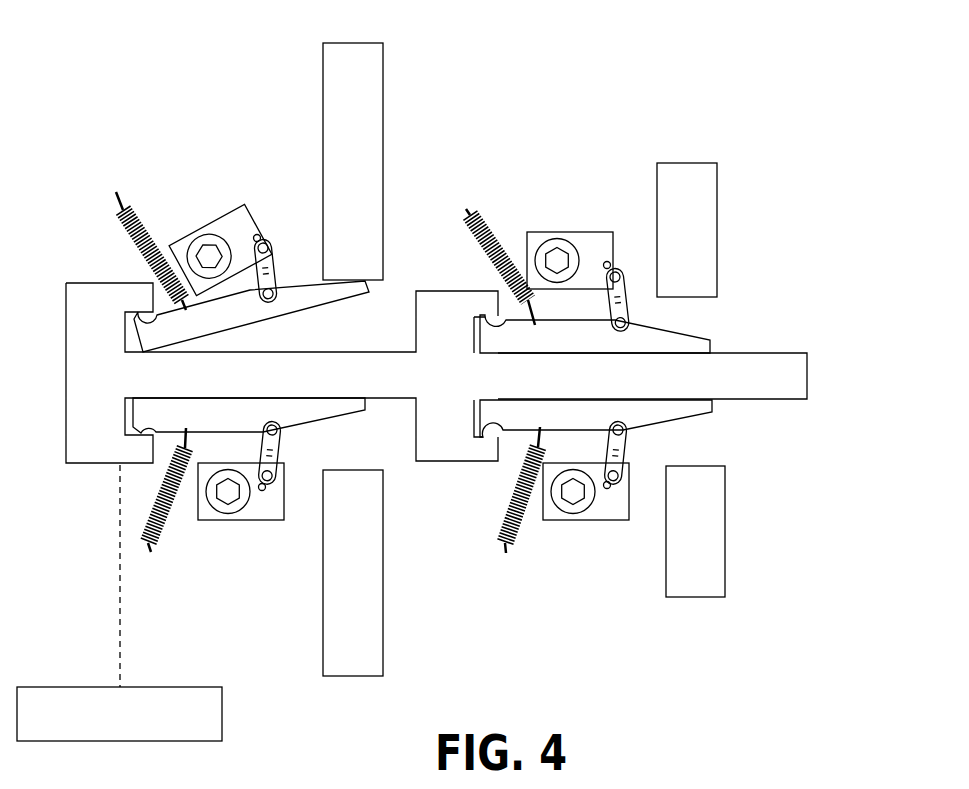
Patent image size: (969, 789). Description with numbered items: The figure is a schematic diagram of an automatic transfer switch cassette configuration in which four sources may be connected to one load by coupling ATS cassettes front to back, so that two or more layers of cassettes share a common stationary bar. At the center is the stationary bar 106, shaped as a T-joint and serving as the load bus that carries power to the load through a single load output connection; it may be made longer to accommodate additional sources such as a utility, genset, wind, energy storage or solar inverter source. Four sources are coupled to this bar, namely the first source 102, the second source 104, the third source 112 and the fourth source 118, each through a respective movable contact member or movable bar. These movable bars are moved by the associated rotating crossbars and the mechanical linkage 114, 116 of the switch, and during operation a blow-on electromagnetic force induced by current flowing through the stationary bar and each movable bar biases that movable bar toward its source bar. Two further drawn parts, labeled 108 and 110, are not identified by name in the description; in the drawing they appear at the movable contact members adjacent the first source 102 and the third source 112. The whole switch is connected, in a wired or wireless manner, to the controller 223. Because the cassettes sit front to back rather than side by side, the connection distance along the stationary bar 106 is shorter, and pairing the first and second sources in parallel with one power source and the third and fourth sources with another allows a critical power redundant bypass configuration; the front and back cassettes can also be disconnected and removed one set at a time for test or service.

The first source 102 is at (383, 78).
The second source 104 is at (717, 205).
The stationary bar 106 is at (772, 400).
The first movable contact arm 108 is at (310, 277).
The third movable contact arm 110 is at (342, 417).
The third source 112 is at (383, 642).
The mechanical linkage 114 is at (148, 215).
The mechanical linkage 116 is at (167, 532).
The fourth source 118 is at (725, 543).
The controller 223 is at (119, 603).